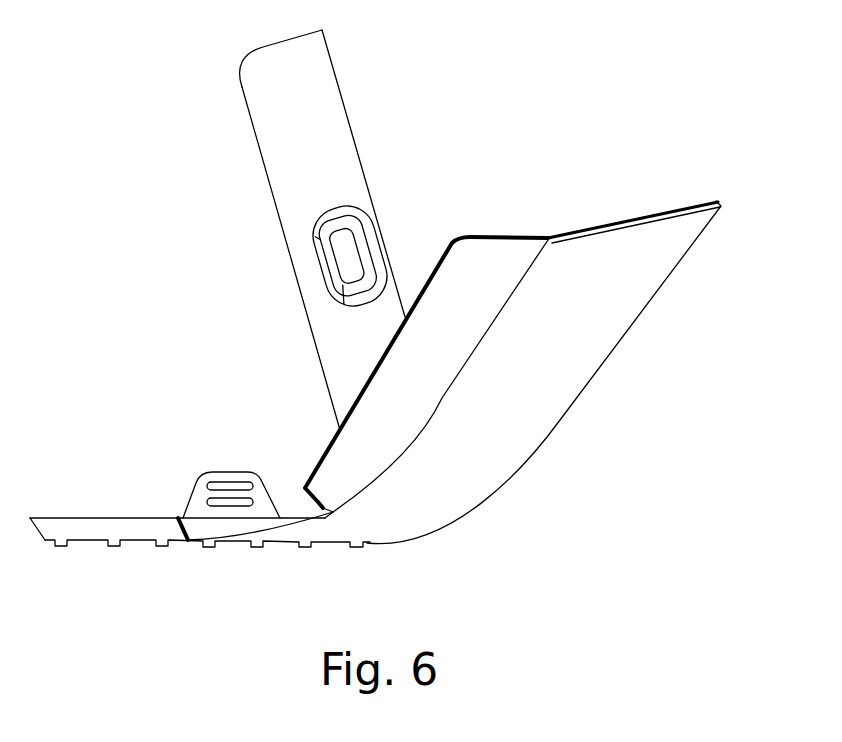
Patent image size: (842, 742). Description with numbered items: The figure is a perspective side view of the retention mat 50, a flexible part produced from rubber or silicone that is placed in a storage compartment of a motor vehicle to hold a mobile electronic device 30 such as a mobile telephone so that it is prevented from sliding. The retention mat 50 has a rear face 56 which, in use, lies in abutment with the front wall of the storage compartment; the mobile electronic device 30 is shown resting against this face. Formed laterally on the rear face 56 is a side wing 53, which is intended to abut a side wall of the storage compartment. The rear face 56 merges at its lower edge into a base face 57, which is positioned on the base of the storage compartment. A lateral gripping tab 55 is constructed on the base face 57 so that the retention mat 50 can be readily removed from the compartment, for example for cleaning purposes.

The mobile electronic device 30 is at (337, 167).
The retention mat 50 is at (484, 344).
The side wing 53 is at (492, 265).
The lateral gripping tab 55 is at (193, 492).
The rear face 56 is at (588, 310).
The base face 57 is at (87, 527).